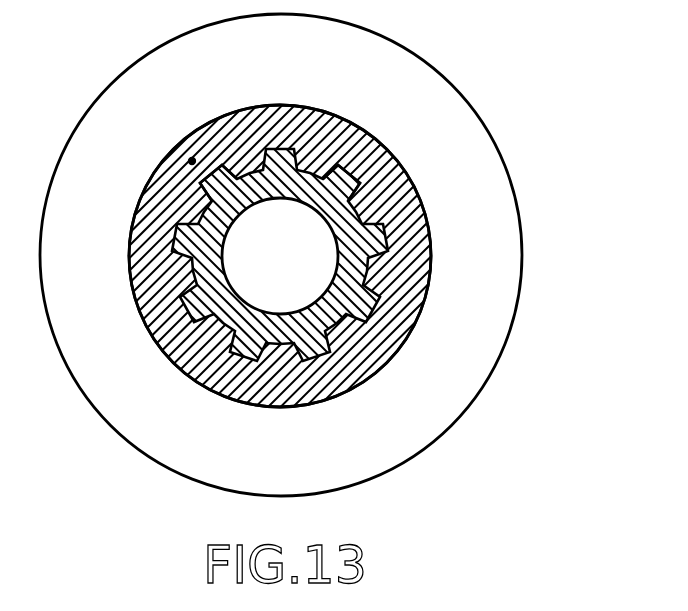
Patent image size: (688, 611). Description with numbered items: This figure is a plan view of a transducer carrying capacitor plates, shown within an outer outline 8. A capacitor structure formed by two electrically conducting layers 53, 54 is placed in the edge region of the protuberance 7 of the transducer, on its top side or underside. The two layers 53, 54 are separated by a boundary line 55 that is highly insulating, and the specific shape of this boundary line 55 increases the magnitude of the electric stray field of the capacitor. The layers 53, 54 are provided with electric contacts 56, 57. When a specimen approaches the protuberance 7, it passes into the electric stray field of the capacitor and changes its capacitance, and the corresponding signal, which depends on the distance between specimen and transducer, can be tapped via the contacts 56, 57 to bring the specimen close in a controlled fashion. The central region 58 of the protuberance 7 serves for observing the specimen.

The protuberance 7 is at (362, 386).
The housing 8 is at (472, 189).
The electrically conducting layer 53 is at (362, 306).
The electrically conducting layer 54 is at (397, 278).
The boundary line 55 is at (358, 172).
The electric contact 56 is at (222, 188).
The electric contact 57 is at (192, 160).
The central region 58 is at (295, 243).